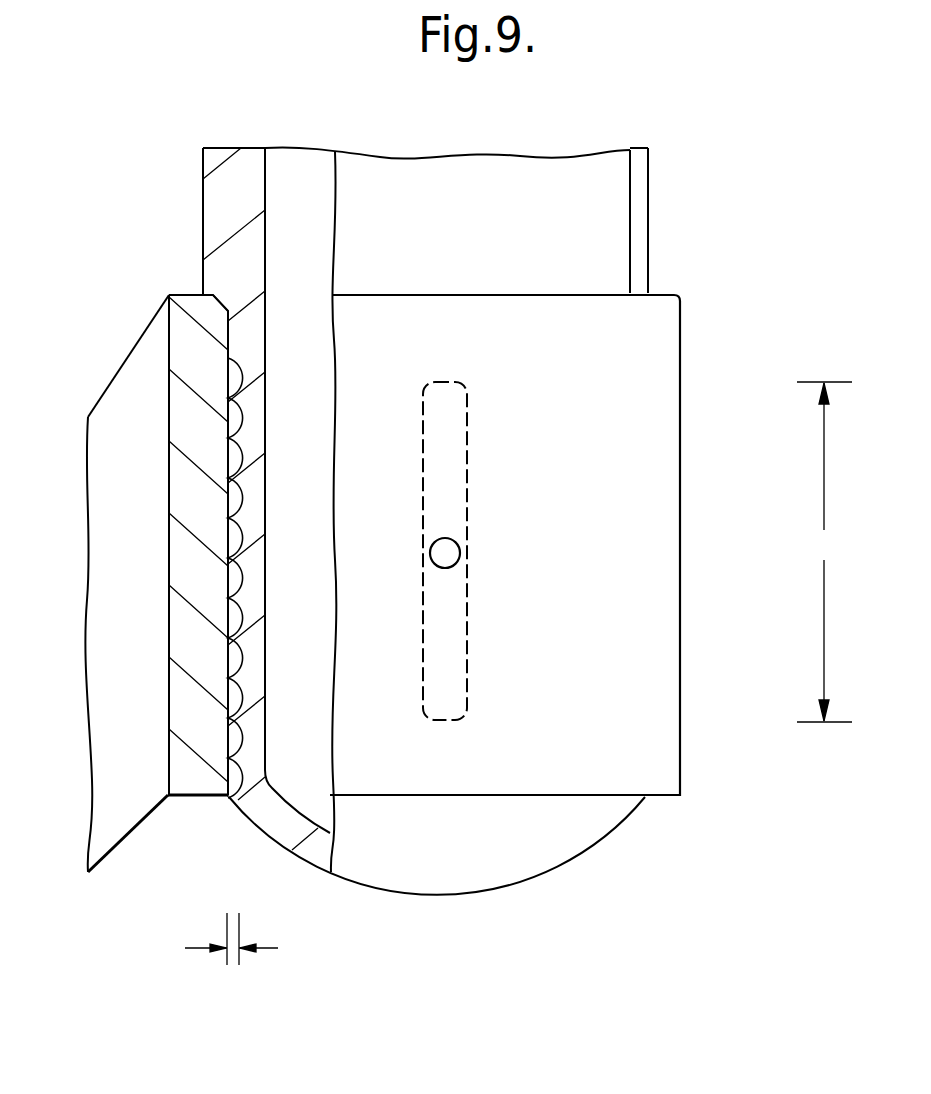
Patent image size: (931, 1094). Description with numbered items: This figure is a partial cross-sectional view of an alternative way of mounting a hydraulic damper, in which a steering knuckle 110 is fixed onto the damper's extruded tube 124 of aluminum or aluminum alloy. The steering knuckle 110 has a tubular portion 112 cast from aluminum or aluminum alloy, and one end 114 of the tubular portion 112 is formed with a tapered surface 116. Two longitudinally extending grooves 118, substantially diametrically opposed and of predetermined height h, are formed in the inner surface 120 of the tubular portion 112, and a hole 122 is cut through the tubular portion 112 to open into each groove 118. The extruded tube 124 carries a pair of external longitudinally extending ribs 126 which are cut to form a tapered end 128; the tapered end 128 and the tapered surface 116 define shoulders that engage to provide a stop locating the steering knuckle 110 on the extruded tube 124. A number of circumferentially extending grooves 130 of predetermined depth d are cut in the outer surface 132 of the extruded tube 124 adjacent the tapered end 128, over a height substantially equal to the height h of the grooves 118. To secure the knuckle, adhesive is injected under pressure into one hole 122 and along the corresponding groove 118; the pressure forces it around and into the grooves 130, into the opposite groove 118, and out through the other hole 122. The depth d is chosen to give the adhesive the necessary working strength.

The steering knuckle 110 is at (650, 567).
The tubular portion 112 is at (658, 758).
The one end of the tubular portion 114 is at (667, 293).
The tapered surface 116 is at (205, 300).
The longitudinally extending groove 118 is at (465, 688).
The inner surface of the tubular portion 120 is at (236, 770).
The hole 122 is at (450, 558).
The extruded tube 124 is at (531, 186).
The external longitudinally extending rib 126 is at (223, 207).
The tapered end 128 is at (229, 311).
The circumferentially extending groove 130 is at (235, 662).
The outer surface of the extruded tube 132 is at (228, 737).
The predetermined height h is at (824, 552).
The predetermined depth d is at (233, 946).